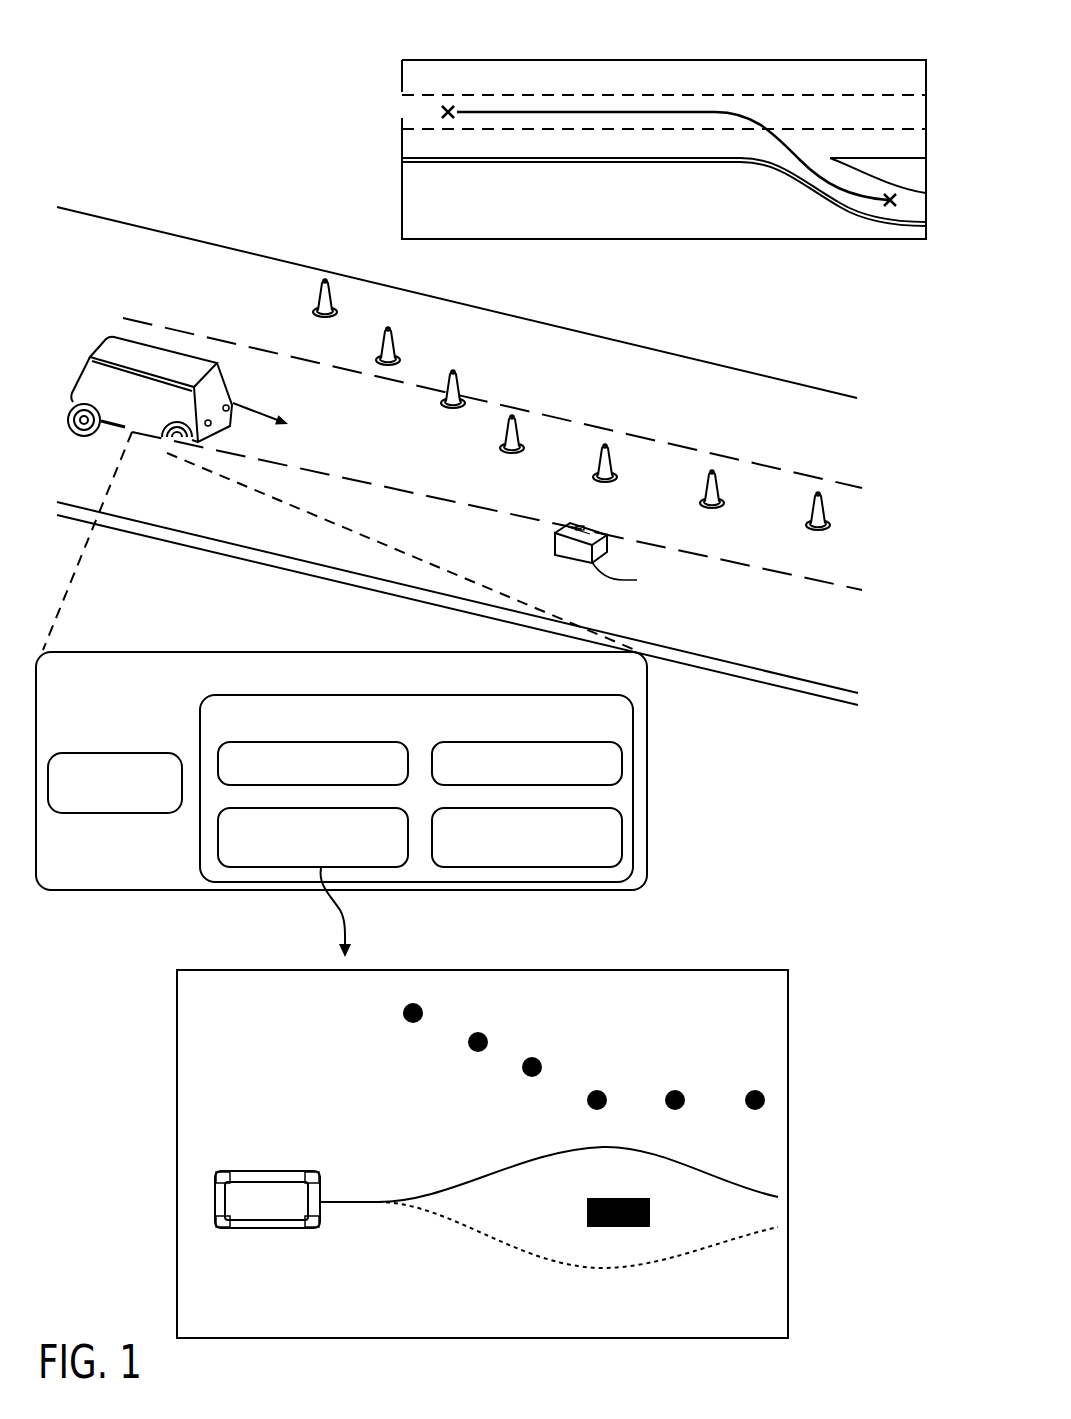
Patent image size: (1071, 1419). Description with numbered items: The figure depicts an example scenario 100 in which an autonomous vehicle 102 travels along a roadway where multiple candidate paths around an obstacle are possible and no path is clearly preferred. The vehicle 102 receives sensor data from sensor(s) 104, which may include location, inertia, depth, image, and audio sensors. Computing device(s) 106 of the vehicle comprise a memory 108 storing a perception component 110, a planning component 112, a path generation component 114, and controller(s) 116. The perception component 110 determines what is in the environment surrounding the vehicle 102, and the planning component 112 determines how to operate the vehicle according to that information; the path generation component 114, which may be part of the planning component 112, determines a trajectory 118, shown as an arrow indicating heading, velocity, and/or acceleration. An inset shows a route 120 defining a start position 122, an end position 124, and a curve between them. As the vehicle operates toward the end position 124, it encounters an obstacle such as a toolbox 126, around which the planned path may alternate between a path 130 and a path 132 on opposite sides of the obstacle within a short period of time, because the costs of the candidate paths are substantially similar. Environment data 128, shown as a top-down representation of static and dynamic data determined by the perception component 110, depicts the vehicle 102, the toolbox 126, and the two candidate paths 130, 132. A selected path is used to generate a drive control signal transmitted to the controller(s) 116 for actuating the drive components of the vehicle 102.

The example scenario 100 is at (150, 40).
The vehicle 102 is at (196, 779).
The sensor(s) 104 is at (132, 809).
The computing device(s) 106 is at (448, 682).
The memory 108 is at (472, 729).
The perception component 110 is at (380, 776).
The planning component 112 is at (585, 776).
The path generation component 114 is at (328, 862).
The controller(s) 116 is at (607, 847).
The trajectory 118 is at (335, 397).
The route 120 is at (672, 118).
The start position 122 is at (328, 104).
The end position 124 is at (799, 231).
The toolbox 126 is at (672, 1258).
The environment data 128 is at (558, 1131).
The path 130 is at (549, 1159).
The path 132 is at (569, 1249).